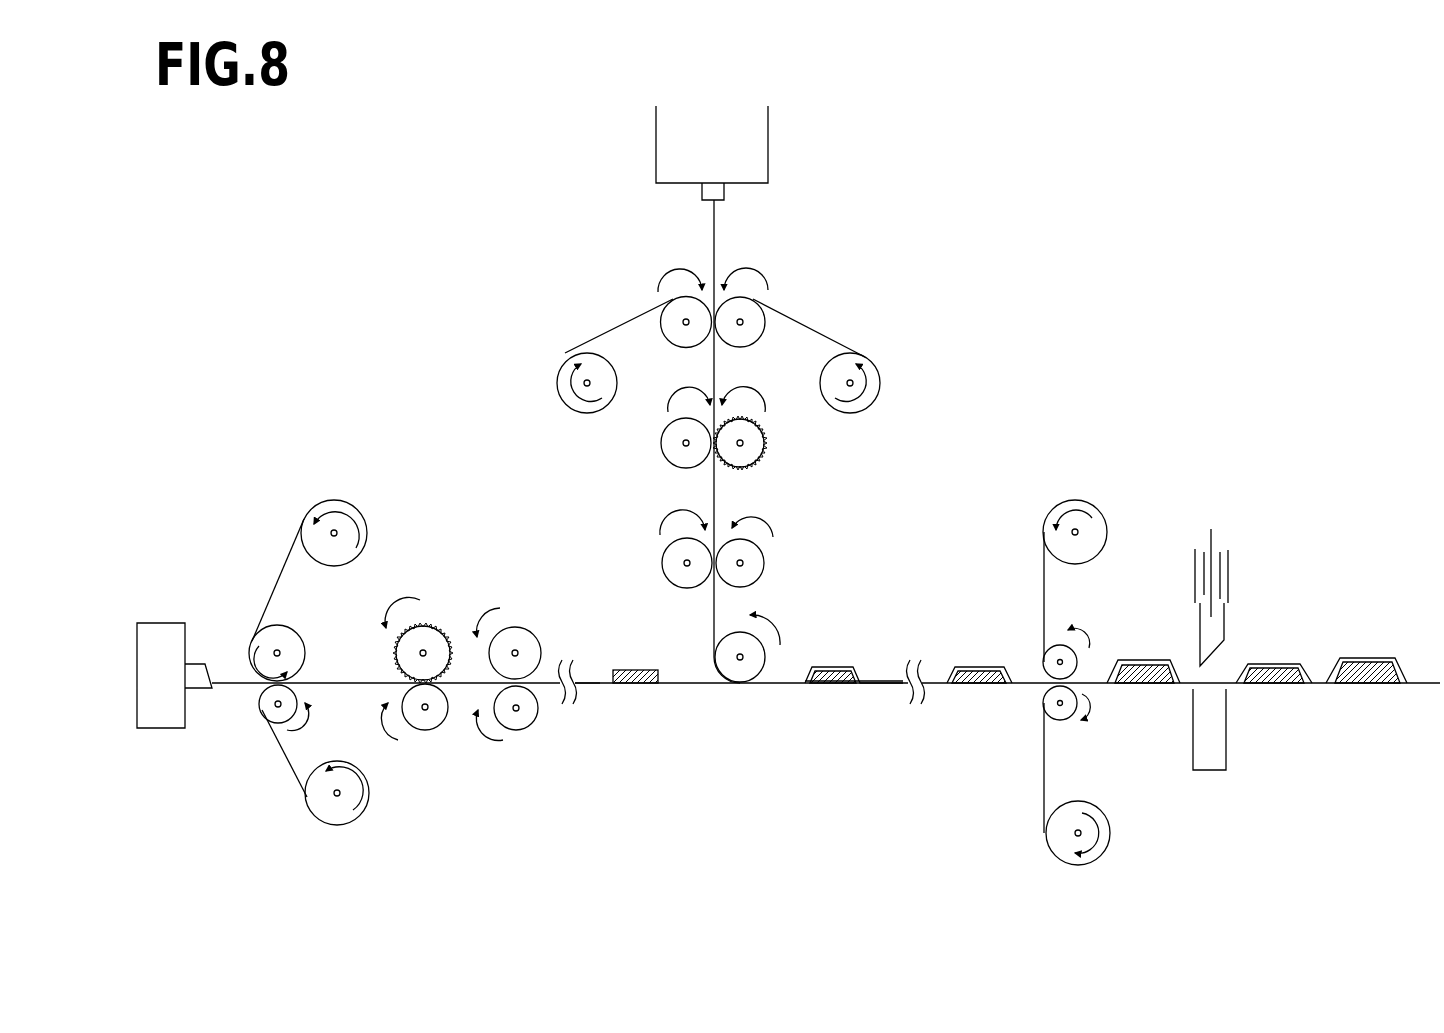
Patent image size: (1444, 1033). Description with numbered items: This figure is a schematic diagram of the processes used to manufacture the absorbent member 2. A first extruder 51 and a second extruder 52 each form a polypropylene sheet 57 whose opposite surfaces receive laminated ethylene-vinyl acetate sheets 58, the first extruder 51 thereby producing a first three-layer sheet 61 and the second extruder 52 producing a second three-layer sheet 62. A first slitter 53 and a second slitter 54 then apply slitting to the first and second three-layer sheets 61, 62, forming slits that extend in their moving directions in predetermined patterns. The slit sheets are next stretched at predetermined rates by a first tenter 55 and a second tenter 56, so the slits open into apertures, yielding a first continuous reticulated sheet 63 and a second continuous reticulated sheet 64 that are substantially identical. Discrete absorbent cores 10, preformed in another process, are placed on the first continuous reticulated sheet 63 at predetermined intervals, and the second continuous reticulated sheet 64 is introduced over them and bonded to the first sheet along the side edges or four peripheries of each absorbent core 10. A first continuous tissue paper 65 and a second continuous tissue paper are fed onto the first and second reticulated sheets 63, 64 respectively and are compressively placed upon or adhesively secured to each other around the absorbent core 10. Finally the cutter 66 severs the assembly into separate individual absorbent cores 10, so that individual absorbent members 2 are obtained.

The absorbent member 2 is at (1280, 633).
The absorbent core 10 is at (627, 670).
The first extruder 51 is at (155, 720).
The second extruder 52 is at (760, 148).
The first slitter 53 is at (432, 723).
The second slitter 54 is at (763, 460).
The first tenter 55 is at (525, 718).
The second tenter 56 is at (767, 563).
The polypropylene sheet 57 is at (716, 236).
The ethylene-vinyl acetate sheets 58 is at (287, 577).
The first three-layer sheet 61 is at (345, 680).
The second three-layer sheet 62 is at (708, 372).
The first continuous reticulated sheet 63 is at (553, 690).
The second continuous reticulated sheet 64 is at (716, 603).
The first continuous tissue paper 65 is at (1040, 759).
The cutter 66 is at (1042, 574).